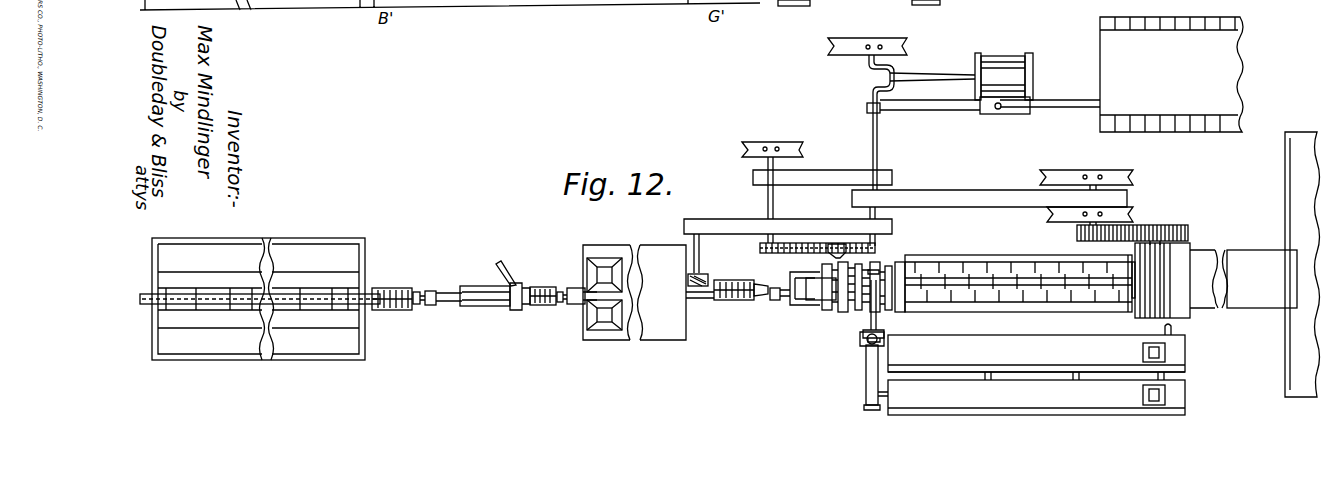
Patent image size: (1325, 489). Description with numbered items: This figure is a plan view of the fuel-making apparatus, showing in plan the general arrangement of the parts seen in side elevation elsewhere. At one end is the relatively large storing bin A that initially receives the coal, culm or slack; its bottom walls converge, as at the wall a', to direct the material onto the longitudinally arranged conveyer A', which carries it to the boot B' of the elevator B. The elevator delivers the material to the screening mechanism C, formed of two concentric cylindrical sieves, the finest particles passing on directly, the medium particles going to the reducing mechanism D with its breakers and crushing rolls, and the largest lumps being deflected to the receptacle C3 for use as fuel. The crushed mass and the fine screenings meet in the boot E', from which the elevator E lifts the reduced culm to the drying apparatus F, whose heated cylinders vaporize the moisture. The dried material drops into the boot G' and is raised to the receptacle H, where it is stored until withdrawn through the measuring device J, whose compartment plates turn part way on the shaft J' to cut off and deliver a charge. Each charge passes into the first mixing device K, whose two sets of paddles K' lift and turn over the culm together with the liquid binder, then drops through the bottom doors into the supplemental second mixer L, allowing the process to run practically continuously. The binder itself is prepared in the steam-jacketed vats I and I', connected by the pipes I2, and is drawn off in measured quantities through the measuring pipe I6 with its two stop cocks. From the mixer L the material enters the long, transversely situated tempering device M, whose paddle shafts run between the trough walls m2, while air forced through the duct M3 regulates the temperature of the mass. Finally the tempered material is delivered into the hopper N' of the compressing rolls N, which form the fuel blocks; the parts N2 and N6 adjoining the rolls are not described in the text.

The storing bin A is at (258, 283).
The conveyer A' is at (258, 325).
The converging bin wall a' is at (260, 293).
The elevator B is at (437, 284).
The boot of the elevator B' is at (392, 287).
The screening mechanism C is at (482, 306).
The receptacle for large lumps C3 is at (487, 264).
The reducing mechanism D is at (515, 305).
The elevator E is at (570, 307).
The boot E' is at (543, 283).
The drying apparatus F is at (634, 292).
The boot of the elevator G' is at (733, 295).
The receptacle H is at (800, 302).
The measuring device J is at (821, 289).
The shaft of measuring device J' is at (828, 297).
The first mixing device K is at (854, 288).
The mixers K' is at (827, 252).
The second mixer L is at (884, 302).
The tempering mixing device M is at (1018, 284).
The trough walls m2 is at (1017, 270).
The duct M3 is at (1028, 300).
The compressing rolls N is at (1136, 289).
The hopper of the compressing rolls N' is at (1132, 220).
The shaft block N2 is at (1243, 279).
The upright frame bar N6 is at (1298, 334).
The vat I is at (1036, 393).
The vat I' is at (1036, 348).
The pipes or ducts I2 is at (982, 372).
The measuring pipe I6 is at (866, 361).